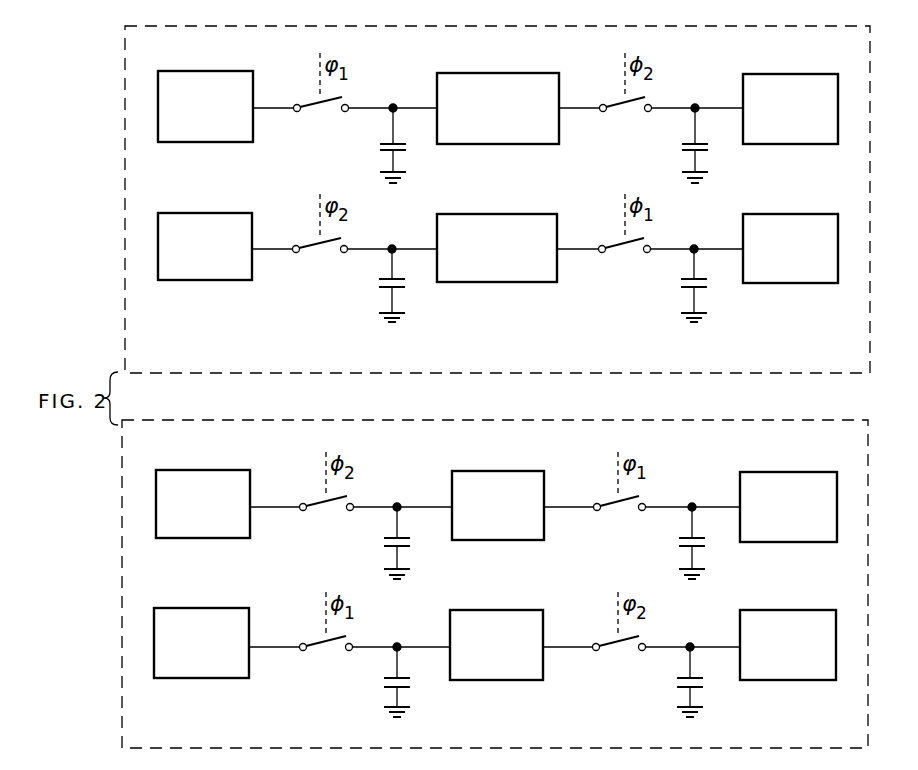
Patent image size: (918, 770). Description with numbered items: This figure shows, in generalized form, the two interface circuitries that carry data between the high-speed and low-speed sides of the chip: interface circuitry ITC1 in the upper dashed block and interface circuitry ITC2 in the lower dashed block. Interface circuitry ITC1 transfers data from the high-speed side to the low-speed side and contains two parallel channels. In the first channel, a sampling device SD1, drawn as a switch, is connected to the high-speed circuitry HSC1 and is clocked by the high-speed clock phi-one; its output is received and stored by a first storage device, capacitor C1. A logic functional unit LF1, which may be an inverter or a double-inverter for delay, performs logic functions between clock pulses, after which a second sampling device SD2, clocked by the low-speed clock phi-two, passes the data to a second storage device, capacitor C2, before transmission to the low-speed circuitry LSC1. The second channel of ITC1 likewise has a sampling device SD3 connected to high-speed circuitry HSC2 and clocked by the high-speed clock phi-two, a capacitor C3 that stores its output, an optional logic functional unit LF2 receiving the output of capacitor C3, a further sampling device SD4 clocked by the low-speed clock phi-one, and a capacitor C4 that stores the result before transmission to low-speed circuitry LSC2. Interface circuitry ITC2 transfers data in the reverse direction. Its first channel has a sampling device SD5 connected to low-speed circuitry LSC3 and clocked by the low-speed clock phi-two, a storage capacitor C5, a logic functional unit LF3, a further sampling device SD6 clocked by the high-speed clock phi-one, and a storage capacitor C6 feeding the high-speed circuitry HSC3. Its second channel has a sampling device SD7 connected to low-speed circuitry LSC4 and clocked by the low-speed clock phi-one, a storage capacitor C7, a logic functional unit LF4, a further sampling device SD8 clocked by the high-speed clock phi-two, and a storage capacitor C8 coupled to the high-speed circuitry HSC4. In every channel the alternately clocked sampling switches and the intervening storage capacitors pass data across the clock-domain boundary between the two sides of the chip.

The interface circuitry ITC1 is at (123, 236).
The interface circuitry ITC2 is at (120, 658).
The high-speed circuitry HSC1 is at (205, 106).
The high-speed circuitry HSC2 is at (205, 246).
The high-speed circuitry HSC3 is at (788, 507).
The high-speed circuitry HSC4 is at (788, 645).
The low-speed circuitry LSC1 is at (790, 109).
The low-speed circuitry LSC2 is at (790, 248).
The low-speed circuitry LSC3 is at (203, 504).
The low-speed circuitry LSC4 is at (201, 643).
The logic functional unit LF1 is at (525, 61).
The logic functional unit LF2 is at (497, 248).
The logic functional unit LF3 is at (498, 505).
The logic functional unit LF4 is at (496, 645).
The sampling device SD1 is at (392, 96).
The sampling device SD2 is at (694, 96).
The sampling device SD3 is at (391, 237).
The sampling device SD4 is at (693, 237).
The sampling device SD5 is at (396, 495).
The sampling device SD6 is at (691, 495).
The sampling device SD7 is at (396, 635).
The sampling device SD8 is at (689, 635).
The capacitor C1 is at (378, 145).
The capacitor C2 is at (680, 145).
The capacitor C3 is at (377, 285).
The capacitor C4 is at (679, 285).
The storage capacitor C5 is at (382, 543).
The storage capacitor C6 is at (677, 543).
The storage capacitor C7 is at (382, 682).
The storage capacitor C8 is at (675, 682).